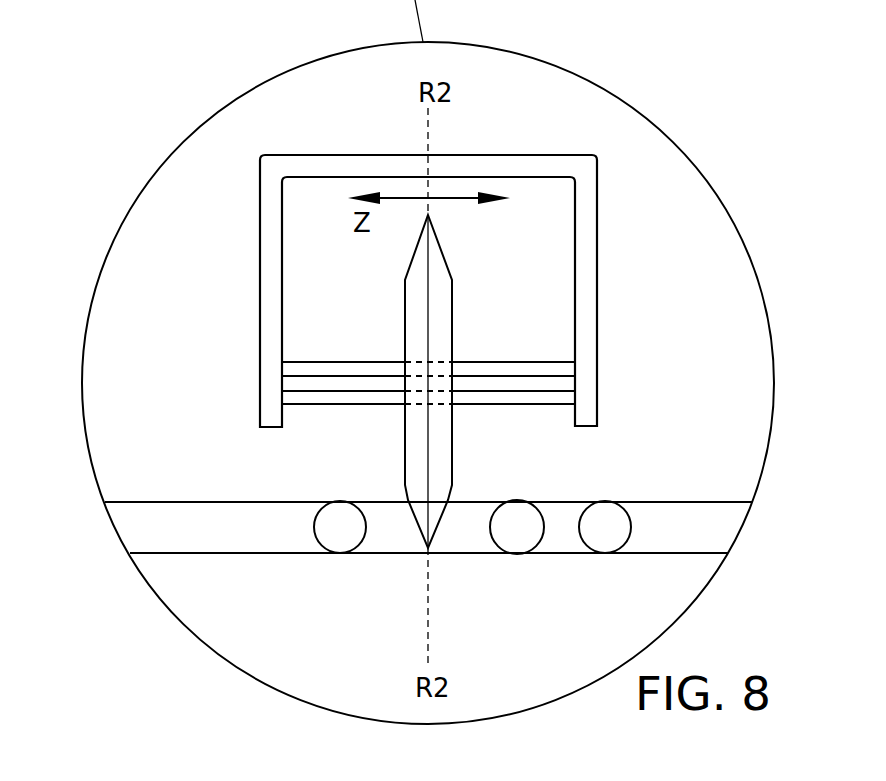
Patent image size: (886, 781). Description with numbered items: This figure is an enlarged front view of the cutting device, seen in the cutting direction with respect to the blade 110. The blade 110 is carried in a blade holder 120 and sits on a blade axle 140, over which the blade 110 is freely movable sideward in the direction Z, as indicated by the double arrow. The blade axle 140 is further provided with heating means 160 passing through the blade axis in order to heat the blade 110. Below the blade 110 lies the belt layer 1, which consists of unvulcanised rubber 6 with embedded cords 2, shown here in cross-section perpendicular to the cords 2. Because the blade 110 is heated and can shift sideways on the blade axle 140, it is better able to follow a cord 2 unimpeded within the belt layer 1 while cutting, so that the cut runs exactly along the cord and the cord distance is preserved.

The belt layer 1 is at (688, 562).
The cords 2 is at (517, 537).
The unvulcanised rubber 6 is at (645, 537).
The blade 110 is at (437, 298).
The blade holder 120 is at (580, 341).
The blade axle 140 is at (548, 407).
The heating means 160 is at (570, 381).